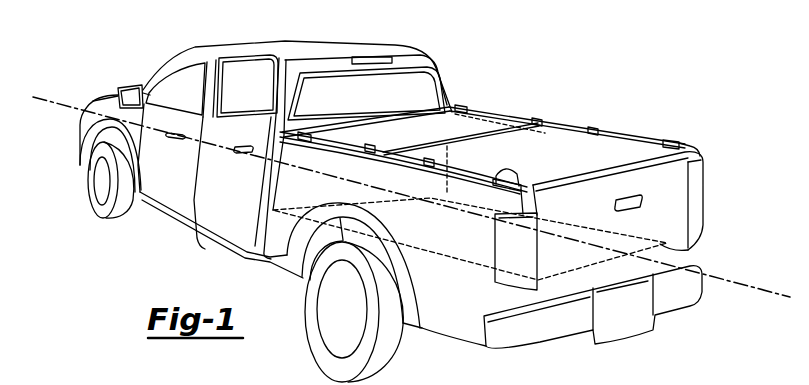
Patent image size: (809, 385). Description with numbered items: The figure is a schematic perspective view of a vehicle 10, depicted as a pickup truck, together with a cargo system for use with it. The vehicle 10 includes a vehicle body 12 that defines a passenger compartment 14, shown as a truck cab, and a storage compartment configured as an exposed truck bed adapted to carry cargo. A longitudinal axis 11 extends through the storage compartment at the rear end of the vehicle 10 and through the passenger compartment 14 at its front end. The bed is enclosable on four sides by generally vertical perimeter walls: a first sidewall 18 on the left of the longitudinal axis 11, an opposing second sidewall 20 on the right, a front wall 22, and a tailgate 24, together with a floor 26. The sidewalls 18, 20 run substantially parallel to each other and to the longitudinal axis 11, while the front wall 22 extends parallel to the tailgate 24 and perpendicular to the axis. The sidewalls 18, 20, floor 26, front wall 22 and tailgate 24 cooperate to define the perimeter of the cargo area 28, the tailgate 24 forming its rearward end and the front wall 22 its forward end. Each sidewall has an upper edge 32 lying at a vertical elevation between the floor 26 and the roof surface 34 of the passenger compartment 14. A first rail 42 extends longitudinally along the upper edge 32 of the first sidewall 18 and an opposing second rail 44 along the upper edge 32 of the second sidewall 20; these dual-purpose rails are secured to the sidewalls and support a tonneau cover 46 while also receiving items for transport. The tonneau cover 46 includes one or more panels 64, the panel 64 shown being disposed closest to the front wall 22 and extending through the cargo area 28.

The vehicle 10 is at (92, 250).
The longitudinal axis 11 is at (53, 100).
The vehicle body 12 is at (110, 96).
The passenger compartment 14 is at (186, 87).
The first sidewall 18 is at (518, 176).
The second sidewall 20 is at (562, 148).
The front wall 22 is at (424, 150).
The tailgate 24 is at (683, 193).
The floor 26 is at (692, 248).
The cargo area 28 is at (528, 147).
The upper edge 32 is at (686, 150).
The roof surface 34 is at (268, 38).
The first rail 42 is at (466, 168).
The second rail 44 is at (644, 131).
The tonneau cover 46 is at (321, 129).
The panel 64 is at (388, 135).